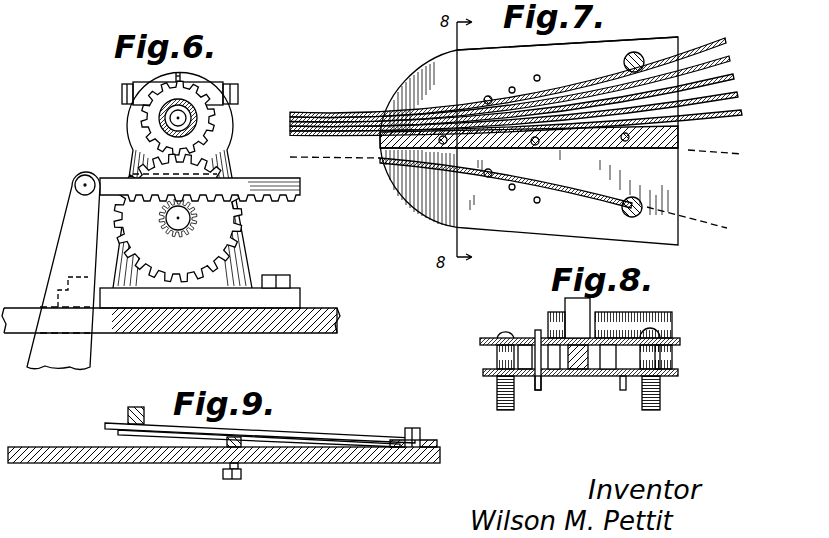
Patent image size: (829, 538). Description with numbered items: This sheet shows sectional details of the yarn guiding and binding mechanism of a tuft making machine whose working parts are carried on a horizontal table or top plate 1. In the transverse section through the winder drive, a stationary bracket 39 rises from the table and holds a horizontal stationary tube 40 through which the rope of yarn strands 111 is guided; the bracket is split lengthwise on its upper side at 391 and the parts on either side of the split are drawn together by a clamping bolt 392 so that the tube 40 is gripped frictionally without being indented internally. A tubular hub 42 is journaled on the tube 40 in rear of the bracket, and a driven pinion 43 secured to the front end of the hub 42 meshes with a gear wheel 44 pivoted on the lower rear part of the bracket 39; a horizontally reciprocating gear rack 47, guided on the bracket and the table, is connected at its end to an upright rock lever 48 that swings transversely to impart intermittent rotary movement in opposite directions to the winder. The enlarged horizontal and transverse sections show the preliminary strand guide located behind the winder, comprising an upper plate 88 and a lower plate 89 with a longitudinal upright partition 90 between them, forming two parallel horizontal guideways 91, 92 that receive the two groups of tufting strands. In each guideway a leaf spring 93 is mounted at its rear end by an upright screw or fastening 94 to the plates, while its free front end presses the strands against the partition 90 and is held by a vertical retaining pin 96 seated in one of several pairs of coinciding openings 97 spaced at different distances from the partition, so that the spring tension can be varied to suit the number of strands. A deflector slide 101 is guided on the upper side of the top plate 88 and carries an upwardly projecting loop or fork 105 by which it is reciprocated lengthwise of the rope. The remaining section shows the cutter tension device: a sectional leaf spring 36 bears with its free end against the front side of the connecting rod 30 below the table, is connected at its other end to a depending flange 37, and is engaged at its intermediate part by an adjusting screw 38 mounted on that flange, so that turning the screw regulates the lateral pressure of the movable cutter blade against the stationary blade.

In FIG. 6, the table or top plate 1 is at (337, 322).
In FIG. 6, the stationary bracket 39 is at (135, 137).
In FIG. 6, the split in bracket 391 is at (178, 74).
In FIG. 6, the clamping bolt 392 is at (122, 86).
In FIG. 6, the stationary tube 40 is at (193, 103).
In FIG. 6, the tubular hub 42 is at (196, 141).
In FIG. 6, the driven pinion 43 is at (208, 125).
In FIG. 6, the gear wheel 44 is at (178, 218).
In FIG. 6, the gear rack 47 is at (281, 198).
In FIG. 6, the rock lever 48 is at (53, 362).
In FIG. 8, the upper plate 88 is at (480, 342).
In FIG. 7, the lower plate 89 is at (680, 40).
In FIG. 8, the lower plate 89 is at (483, 373).
In FIG. 7, the longitudinal partition 90 is at (678, 150).
In FIG. 8, the longitudinal partition 90 is at (578, 368).
In FIG. 7, the guideway 91 is at (682, 124).
In FIG. 8, the guideway 91 is at (556, 366).
In FIG. 7, the guideway 92 is at (668, 189).
In FIG. 8, the guideway 92 is at (605, 366).
In FIG. 7, the leaf spring 93 is at (548, 100).
In FIG. 8, the leaf spring 93 is at (498, 357).
In FIG. 7, the upright screw or fastening 94 is at (640, 54).
In FIG. 8, the upright screw or fastening 94 is at (498, 392).
In FIG. 7, the retaining pin 96 is at (486, 99).
In FIG. 8, the retaining pin 96 is at (538, 391).
In FIG. 7, the opening 97 is at (512, 78).
In FIG. 8, the deflector slide 101 is at (568, 334).
In FIG. 8, the loop or fork 105 is at (565, 302).
In FIG. 7, the strands of yarn 111 is at (727, 68).
In FIG. 9, the connecting rod 30 is at (135, 407).
In FIG. 9, the leaf spring 36 is at (302, 440).
In FIG. 9, the depending flange 37 is at (44, 460).
In FIG. 9, the adjusting screw 38 is at (242, 466).